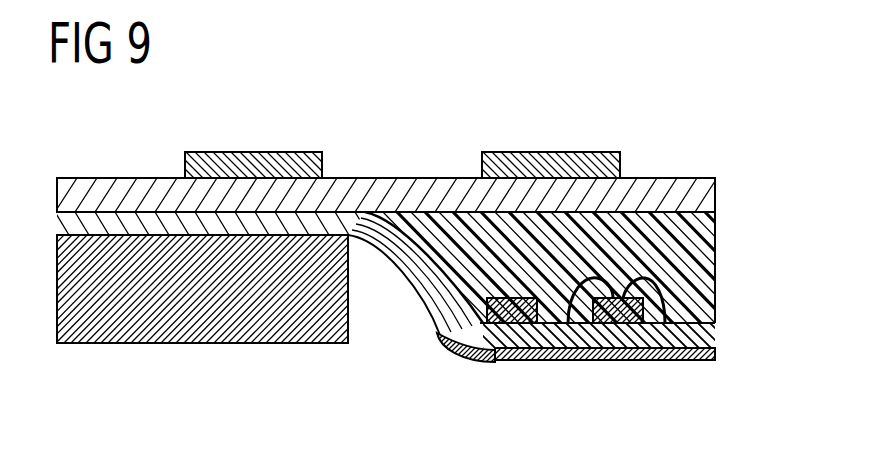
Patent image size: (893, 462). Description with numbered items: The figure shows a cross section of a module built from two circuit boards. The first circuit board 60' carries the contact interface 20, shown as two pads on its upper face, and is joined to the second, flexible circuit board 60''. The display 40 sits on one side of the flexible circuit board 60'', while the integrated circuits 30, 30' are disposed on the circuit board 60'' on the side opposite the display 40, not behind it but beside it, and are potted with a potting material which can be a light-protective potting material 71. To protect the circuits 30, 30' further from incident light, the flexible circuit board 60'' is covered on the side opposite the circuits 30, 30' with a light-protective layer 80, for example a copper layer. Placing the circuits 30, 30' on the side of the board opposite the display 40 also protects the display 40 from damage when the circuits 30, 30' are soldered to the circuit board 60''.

The contact interface 20 is at (478, 167).
The integrated circuit 30 is at (510, 357).
The integrated circuit 30' is at (618, 347).
The display 40 is at (231, 345).
The circuit board 60' is at (386, 160).
The flexible circuit board 60'' is at (410, 290).
The light-protective potting material 71 is at (715, 280).
The light-protective layer 80 is at (585, 350).